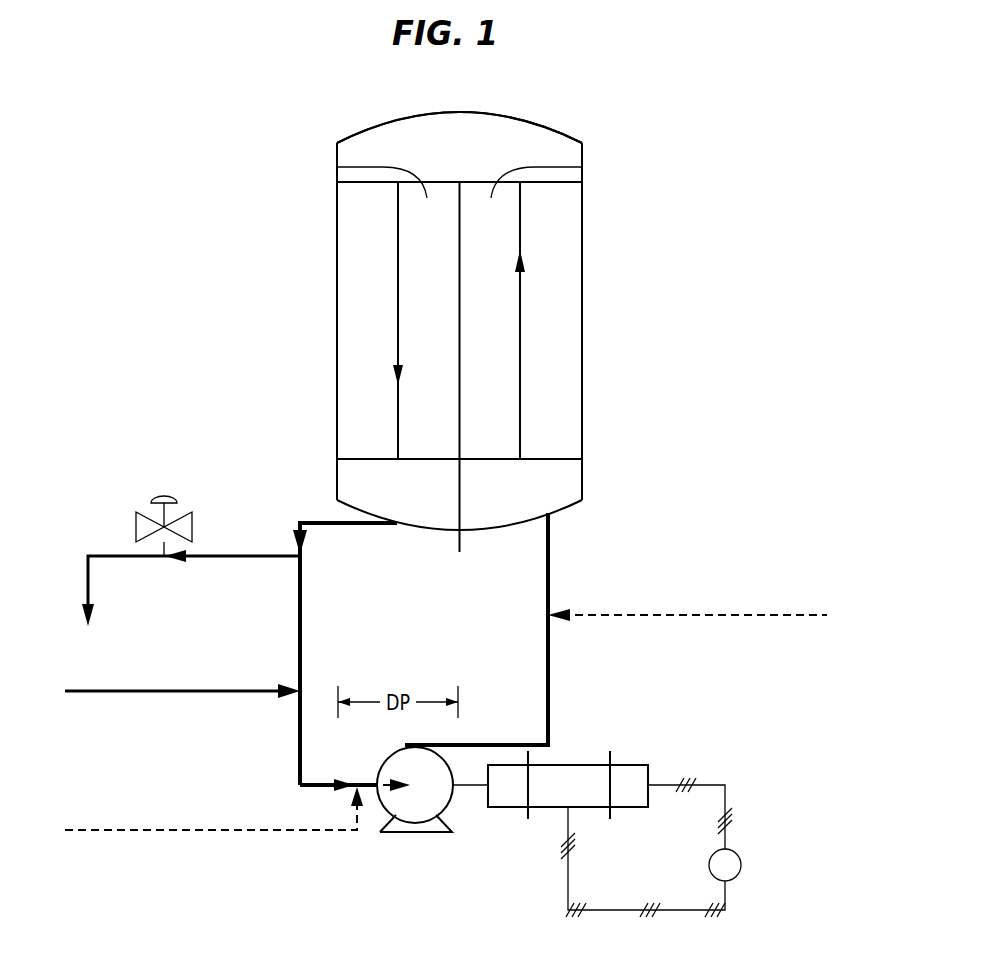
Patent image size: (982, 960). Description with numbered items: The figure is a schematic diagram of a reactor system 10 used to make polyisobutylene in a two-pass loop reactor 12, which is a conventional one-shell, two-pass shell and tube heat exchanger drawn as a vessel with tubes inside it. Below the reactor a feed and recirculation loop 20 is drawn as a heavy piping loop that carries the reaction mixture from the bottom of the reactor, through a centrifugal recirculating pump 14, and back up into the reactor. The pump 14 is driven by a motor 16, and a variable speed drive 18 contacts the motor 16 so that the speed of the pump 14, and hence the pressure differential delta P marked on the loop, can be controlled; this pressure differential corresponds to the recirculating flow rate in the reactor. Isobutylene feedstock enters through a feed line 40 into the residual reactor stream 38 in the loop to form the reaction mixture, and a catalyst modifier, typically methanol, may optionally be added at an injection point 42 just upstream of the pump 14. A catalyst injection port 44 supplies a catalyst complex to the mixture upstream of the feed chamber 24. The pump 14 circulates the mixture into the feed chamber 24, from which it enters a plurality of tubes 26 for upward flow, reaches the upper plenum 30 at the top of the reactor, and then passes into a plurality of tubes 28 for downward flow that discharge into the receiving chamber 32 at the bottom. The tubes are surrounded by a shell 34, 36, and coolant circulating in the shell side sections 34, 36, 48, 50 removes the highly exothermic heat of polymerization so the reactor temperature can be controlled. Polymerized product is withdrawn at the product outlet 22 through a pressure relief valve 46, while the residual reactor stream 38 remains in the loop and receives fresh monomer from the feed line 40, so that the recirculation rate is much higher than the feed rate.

The reactor system 10 is at (142, 355).
The two-pass loop reactor 12 is at (592, 297).
The recirculating pump 14 is at (455, 806).
The motor 16 is at (619, 765).
The variable speed drive 18 is at (739, 854).
The feed and recirculation loop 20 is at (285, 746).
The product outlet 22 is at (91, 592).
The feed chamber 24 is at (572, 482).
The tubes for upward flow 26 is at (521, 410).
The tubes for downward flow 28 is at (398, 257).
The upper plenum 30 is at (490, 122).
The receiving chamber 32 is at (345, 482).
The shell 34 is at (572, 232).
The shell 36 is at (345, 232).
The residual reactor stream 38 is at (303, 581).
The feed line 40 is at (195, 690).
The catalyst modifier injection point 42 is at (236, 832).
The catalyst injection port 44 is at (812, 615).
The pressure relief valve 46 is at (136, 527).
The shell side coolant section 48 is at (582, 166).
The shell side coolant section 50 is at (337, 166).